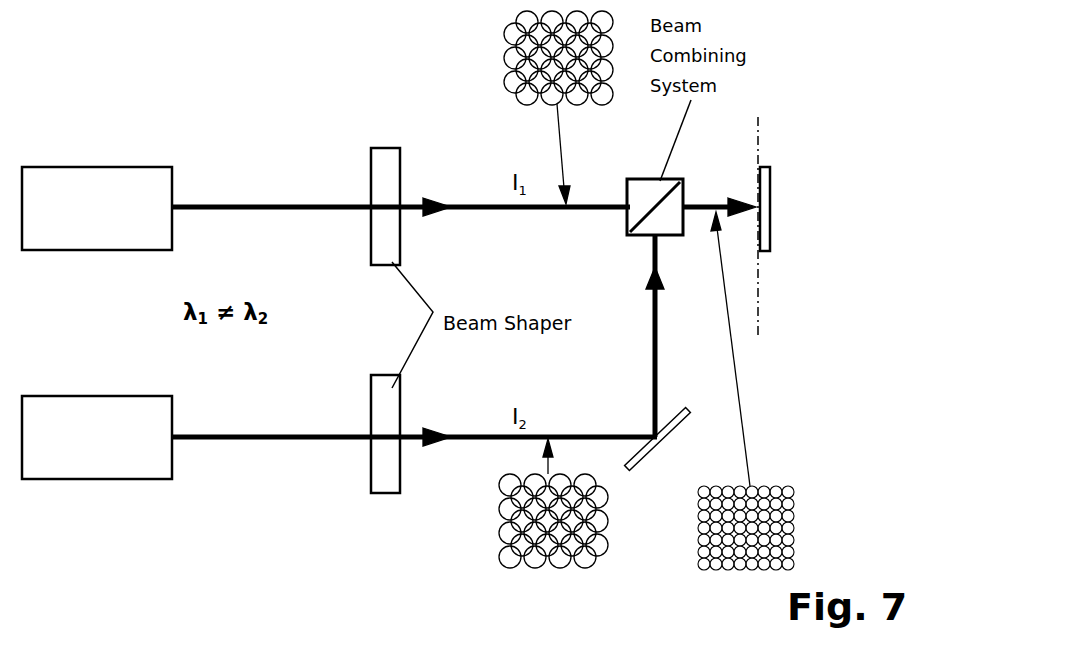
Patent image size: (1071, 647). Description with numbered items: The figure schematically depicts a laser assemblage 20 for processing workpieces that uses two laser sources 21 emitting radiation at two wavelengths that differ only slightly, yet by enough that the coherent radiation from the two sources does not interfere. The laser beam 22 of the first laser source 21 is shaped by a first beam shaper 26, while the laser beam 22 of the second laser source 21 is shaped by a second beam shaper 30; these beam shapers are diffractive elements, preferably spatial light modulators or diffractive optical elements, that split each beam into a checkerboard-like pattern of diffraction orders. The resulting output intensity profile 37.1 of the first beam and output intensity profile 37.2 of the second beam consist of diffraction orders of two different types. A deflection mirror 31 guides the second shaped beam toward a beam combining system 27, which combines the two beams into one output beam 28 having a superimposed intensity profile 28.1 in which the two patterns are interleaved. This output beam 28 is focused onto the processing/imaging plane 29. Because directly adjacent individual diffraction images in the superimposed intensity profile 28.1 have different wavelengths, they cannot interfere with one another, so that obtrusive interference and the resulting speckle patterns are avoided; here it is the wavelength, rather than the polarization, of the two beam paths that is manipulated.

The laser assemblage 20 is at (798, 126).
The laser source 21 is at (68, 167).
The laser beam 22 is at (222, 205).
The first beam shaper 26 is at (387, 148).
The beam combining system 27 is at (655, 178).
The output beam 28 is at (708, 203).
The superimposed intensity profile 28.1 is at (770, 485).
The processing/imaging plane 29 is at (760, 252).
The second beam shaper 30 is at (385, 375).
The deflection mirror 31 is at (668, 440).
The output intensity profile 37.1 is at (505, 34).
The output intensity profile 37.2 is at (500, 531).